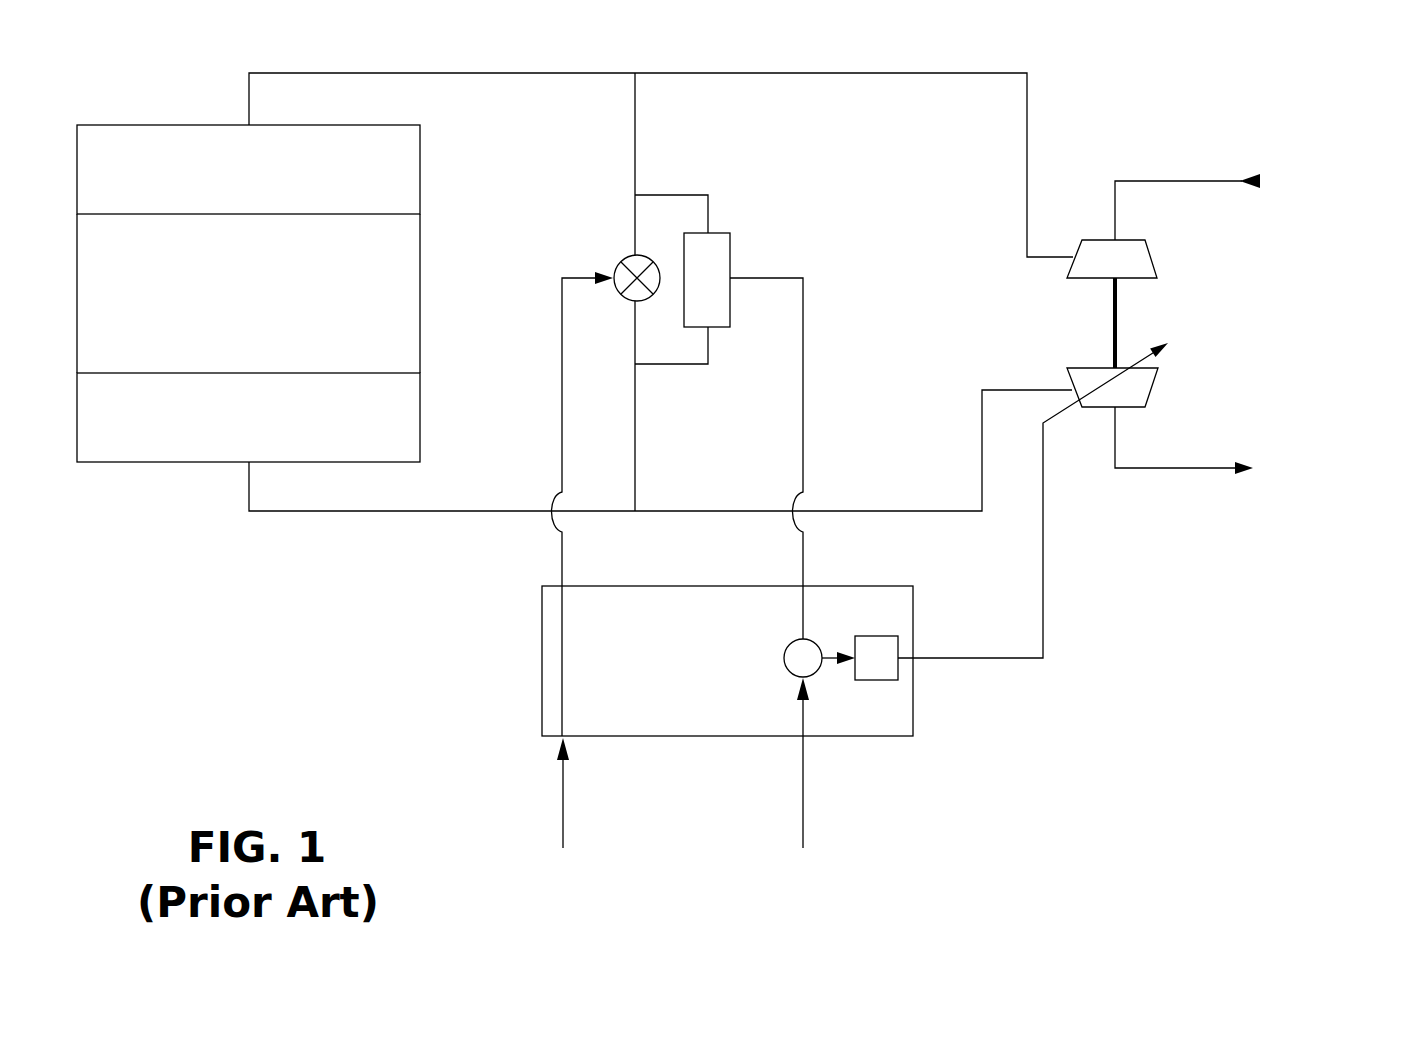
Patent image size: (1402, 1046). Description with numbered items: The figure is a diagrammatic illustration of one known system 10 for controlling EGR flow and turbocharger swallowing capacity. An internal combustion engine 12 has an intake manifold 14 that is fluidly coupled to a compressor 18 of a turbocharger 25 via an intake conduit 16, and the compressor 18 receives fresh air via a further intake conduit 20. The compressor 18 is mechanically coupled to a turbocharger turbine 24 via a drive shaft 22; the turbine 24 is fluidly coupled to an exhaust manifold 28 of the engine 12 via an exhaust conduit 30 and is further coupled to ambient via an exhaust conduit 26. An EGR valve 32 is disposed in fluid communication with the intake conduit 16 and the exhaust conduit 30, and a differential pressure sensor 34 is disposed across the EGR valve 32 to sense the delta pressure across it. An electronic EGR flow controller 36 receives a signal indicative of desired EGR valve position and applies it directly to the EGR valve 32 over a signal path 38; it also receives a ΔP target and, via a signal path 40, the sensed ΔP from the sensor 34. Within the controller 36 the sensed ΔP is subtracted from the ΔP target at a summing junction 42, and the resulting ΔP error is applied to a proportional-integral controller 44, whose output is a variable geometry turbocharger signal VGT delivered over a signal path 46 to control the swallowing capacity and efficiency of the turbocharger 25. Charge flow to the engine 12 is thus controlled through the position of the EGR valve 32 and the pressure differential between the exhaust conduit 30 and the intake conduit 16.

The system 10 is at (368, 663).
The internal combustion engine 12 is at (420, 288).
The intake manifold 14 is at (420, 163).
The intake conduit 16 is at (548, 73).
The compressor 18 is at (1098, 240).
The intake conduit 20 is at (1188, 181).
The drive shaft 22 is at (1110, 333).
The turbocharger turbine 24 is at (1098, 408).
The turbocharger 25 is at (1208, 322).
The exhaust conduit 26 is at (1183, 468).
The exhaust manifold 28 is at (420, 415).
The exhaust conduit 30 is at (383, 512).
The EGR valve 32 is at (627, 258).
The differential pressure sensor 34 is at (730, 257).
The EGR flow controller 36 is at (542, 652).
The signal path 38 is at (562, 562).
The signal path 40 is at (803, 562).
The summing junction 42 is at (817, 643).
The proportional-integral controller 44 is at (875, 680).
The signal path 46 is at (1043, 593).